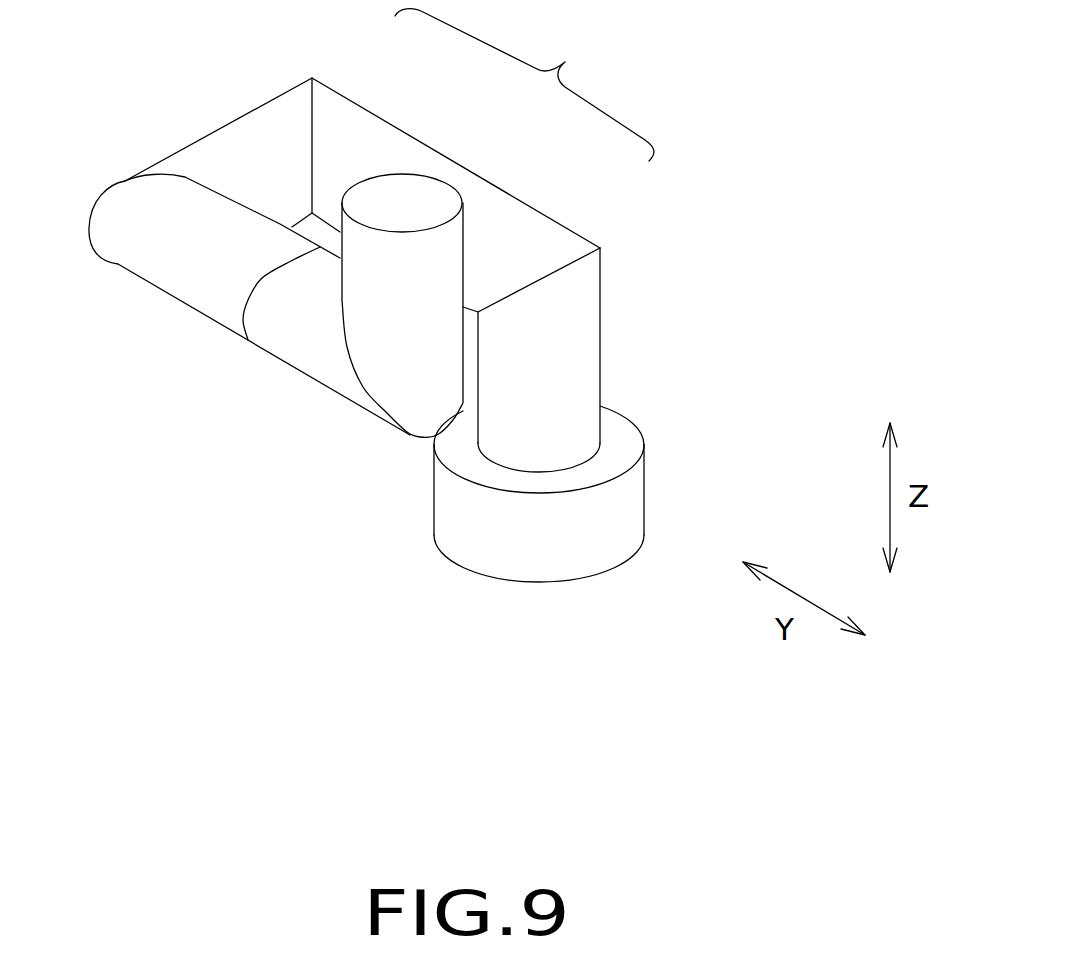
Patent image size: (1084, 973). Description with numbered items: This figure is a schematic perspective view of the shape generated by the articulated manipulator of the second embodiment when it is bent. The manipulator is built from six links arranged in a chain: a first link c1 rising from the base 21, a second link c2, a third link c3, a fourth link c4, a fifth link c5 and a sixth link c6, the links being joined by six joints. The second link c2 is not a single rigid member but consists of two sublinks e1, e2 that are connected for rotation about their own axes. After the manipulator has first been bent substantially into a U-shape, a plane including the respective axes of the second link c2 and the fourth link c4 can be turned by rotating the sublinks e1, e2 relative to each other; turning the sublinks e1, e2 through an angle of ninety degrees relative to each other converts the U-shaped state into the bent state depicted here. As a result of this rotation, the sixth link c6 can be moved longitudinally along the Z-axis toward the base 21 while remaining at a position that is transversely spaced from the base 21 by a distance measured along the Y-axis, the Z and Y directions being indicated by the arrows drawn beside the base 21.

The first link c1 is at (585, 309).
The second link c2 is at (524, 85).
The third link c3 is at (242, 140).
The fourth link c4 is at (152, 267).
The fifth link c5 is at (303, 350).
The sixth link c6 is at (387, 380).
The sublink e1 is at (360, 124).
The sublink e2 is at (507, 222).
The base 21 is at (637, 491).